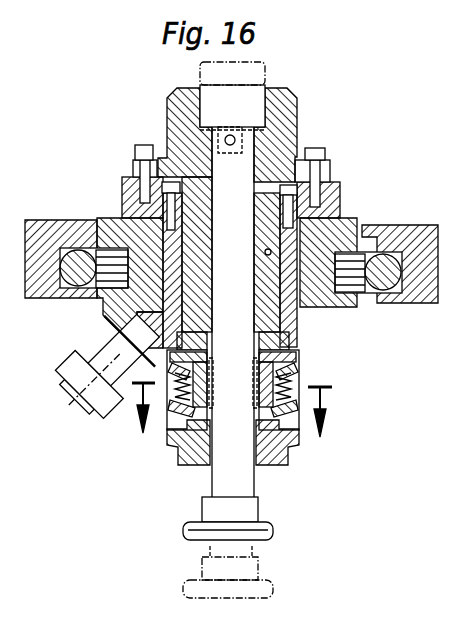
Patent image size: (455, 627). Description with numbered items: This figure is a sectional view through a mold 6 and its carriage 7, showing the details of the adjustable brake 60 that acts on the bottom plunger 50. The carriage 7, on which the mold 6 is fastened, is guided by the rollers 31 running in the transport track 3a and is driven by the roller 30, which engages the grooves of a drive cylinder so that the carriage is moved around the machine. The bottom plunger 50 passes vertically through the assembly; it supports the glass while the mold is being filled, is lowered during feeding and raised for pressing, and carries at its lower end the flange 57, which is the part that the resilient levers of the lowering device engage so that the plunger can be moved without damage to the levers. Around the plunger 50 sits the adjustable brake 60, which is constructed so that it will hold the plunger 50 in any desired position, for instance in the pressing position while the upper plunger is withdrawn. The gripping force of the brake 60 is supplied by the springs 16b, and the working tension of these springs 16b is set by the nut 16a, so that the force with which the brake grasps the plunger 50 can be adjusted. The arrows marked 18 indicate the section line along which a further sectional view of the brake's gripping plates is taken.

The transport track 3a is at (45, 228).
The mold 6 is at (291, 107).
The carriage 7 is at (271, 251).
The nut 16a is at (168, 450).
The springs 16b is at (293, 377).
The section line 18- 18 is at (237, 412).
The roller 30 is at (93, 427).
The rollers 31 is at (98, 290).
The bottom plunger 50 is at (248, 482).
The flange 57 is at (271, 530).
The adjustable brake 60 is at (175, 412).